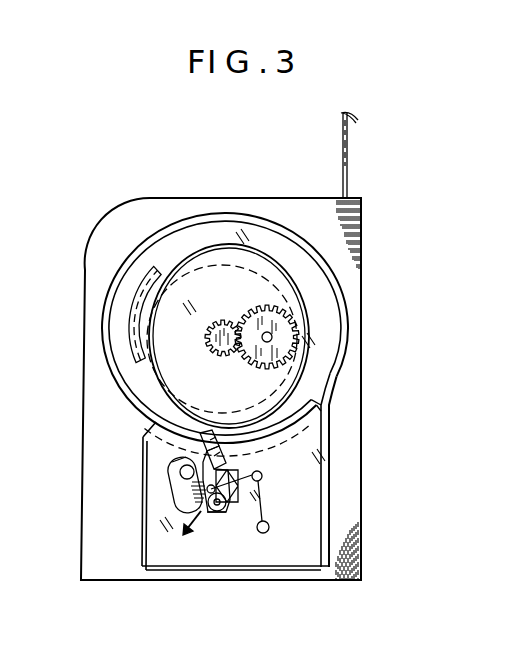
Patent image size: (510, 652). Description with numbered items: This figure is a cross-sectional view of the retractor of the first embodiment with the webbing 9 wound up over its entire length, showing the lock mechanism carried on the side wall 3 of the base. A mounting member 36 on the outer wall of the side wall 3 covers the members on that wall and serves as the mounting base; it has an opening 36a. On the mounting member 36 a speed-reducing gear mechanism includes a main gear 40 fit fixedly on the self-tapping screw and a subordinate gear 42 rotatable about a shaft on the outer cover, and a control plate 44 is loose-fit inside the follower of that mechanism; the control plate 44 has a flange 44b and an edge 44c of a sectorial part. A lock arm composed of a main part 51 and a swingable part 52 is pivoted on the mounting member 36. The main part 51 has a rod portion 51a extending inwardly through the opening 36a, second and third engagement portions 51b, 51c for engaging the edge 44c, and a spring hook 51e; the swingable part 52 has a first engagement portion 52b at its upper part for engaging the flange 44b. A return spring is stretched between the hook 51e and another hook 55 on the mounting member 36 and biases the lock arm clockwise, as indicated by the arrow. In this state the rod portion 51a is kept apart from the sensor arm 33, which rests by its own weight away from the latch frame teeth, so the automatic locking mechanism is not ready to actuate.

The side wall 3 is at (352, 224).
The webbing 9 is at (348, 160).
The sensor arm 33 is at (262, 478).
The mounting member 36 is at (312, 556).
The opening 36a is at (239, 503).
The main gear 40 is at (221, 322).
The subordinate gear 42 is at (273, 316).
The control plate 44 is at (288, 296).
The flange 44b is at (152, 265).
The edge of sectorial part 44c is at (300, 400).
The main part 51 is at (205, 512).
The rod portion 51a is at (210, 516).
The second engagement portion 51b is at (172, 462).
The third engagement portion 51c is at (219, 450).
The spring hook 51e is at (224, 522).
The swingable part 52 is at (174, 497).
The first engagement portion 52b is at (200, 440).
The hook 55 is at (269, 526).